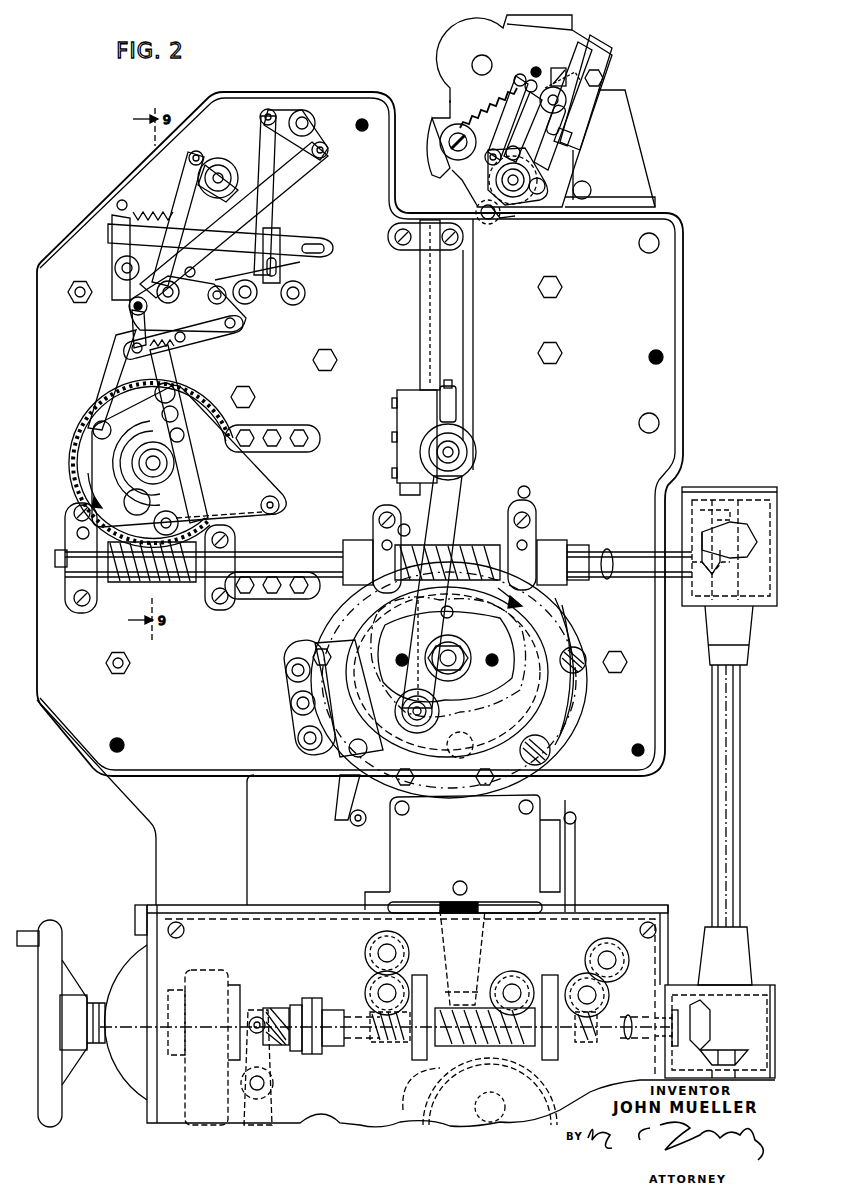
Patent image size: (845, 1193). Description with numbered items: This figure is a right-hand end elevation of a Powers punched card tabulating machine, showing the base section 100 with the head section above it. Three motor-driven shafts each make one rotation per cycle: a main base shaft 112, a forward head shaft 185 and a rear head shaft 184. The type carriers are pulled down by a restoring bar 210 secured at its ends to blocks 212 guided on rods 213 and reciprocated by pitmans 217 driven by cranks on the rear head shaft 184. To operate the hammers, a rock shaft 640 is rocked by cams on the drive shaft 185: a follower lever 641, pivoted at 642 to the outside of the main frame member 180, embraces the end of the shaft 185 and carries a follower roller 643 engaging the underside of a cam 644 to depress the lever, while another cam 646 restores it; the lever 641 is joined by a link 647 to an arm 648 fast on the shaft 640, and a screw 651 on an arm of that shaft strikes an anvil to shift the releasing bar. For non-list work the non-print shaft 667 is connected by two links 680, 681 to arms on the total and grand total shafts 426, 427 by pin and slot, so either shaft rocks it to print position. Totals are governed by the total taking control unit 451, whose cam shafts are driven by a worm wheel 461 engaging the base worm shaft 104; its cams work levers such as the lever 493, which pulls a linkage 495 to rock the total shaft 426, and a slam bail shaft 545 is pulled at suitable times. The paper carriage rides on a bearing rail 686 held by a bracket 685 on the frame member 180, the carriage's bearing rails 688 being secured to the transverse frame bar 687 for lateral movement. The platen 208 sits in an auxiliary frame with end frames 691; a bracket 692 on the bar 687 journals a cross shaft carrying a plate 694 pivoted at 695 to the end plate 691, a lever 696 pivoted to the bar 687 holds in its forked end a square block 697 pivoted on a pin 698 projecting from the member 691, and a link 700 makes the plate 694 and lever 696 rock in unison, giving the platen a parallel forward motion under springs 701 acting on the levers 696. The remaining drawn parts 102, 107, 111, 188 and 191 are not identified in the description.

The base section 100 is at (182, 1112).
The mounting lug 102 is at (555, 50).
The base worm shaft 104 is at (348, 1010).
The lever arm 107 is at (262, 1090).
The gear housing 111 is at (412, 1078).
The main base shaft 112 is at (500, 1110).
The main frame member 180 is at (676, 410).
The rear head shaft 184 is at (452, 656).
The forward head shaft 185 is at (143, 468).
The worm shaft 188 is at (280, 551).
The rod and housings 191 is at (740, 646).
The platen 208 is at (442, 122).
The restoring bar 210 is at (456, 405).
The blocks 212 is at (405, 393).
The rods 213 is at (425, 330).
The pitmans 217 is at (447, 510).
The total shaft 426 is at (262, 302).
The grand total shaft 427 is at (304, 297).
The total taking control unit 451 is at (390, 872).
The worm wheel 461 is at (488, 985).
The lever 493 is at (350, 812).
The linkage 495 is at (345, 782).
The slam bail shaft 545 is at (240, 305).
The rock shaft 640 is at (222, 172).
The follower lever 641 is at (250, 478).
The pivot 642 is at (280, 505).
The follower roller 643 is at (155, 522).
The cam 644 is at (128, 448).
The cam 646 is at (115, 425).
The link 647 is at (118, 372).
The arm 648 is at (208, 160).
The screw 651 is at (183, 298).
The non-print shaft 667 is at (306, 113).
The link 680 is at (258, 140).
The link 681 is at (272, 172).
The bracket 685 is at (635, 170).
The bearing rail 686 is at (612, 96).
The transverse frame bar 687 is at (586, 58).
The bearing rails 688 is at (604, 72).
The end frame 691 is at (455, 42).
The bracket 692 is at (547, 186).
The arm or plate 694 is at (496, 166).
The pivot 695 is at (492, 148).
The lever 696 is at (514, 82).
The square block 697 is at (551, 70).
The pin 698 is at (556, 68).
The link 700 is at (510, 98).
The springs 701 is at (502, 115).